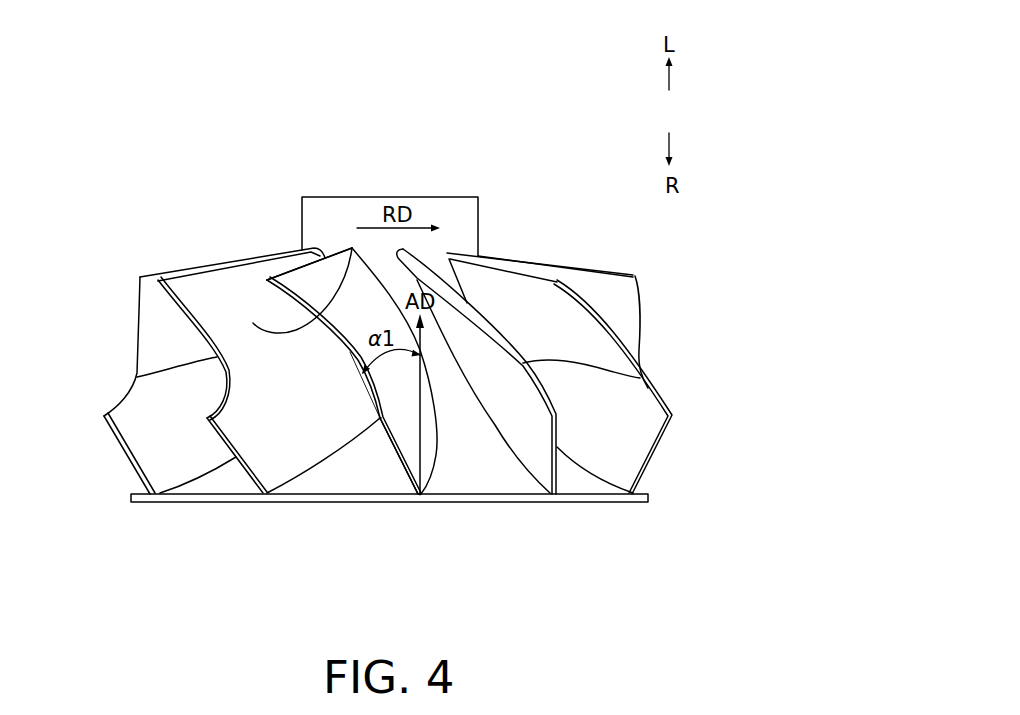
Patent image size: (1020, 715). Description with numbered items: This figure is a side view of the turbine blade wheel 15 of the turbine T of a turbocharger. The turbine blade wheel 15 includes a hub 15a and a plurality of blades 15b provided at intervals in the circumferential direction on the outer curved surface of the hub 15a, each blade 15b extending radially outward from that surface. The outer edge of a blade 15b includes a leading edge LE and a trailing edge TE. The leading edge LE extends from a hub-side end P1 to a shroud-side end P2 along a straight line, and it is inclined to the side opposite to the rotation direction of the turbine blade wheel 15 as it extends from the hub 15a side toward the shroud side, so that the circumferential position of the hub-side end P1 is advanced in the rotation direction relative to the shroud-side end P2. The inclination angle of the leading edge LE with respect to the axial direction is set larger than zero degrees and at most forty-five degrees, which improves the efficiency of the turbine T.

The turbine blade wheel 15 is at (198, 153).
The hub 15a is at (478, 222).
The blade 15b is at (253, 323).
The turbine T is at (115, 60).
The trailing edge TE is at (303, 266).
The leading edge LE is at (401, 462).
The hub-side end P1 is at (418, 495).
The shroud-side end P2 is at (380, 418).